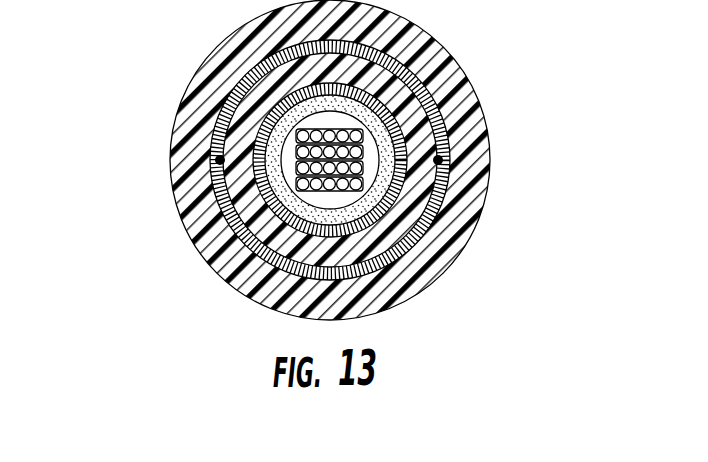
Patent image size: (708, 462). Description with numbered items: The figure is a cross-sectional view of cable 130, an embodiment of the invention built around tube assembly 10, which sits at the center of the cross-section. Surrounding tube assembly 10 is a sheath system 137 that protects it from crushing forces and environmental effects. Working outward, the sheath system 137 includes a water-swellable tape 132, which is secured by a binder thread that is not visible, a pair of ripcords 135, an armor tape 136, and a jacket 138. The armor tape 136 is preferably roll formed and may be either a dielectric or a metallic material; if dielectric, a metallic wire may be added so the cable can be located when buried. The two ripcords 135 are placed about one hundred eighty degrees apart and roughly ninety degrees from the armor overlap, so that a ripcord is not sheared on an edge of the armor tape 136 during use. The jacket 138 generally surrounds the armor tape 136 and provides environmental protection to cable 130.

The cable 130 is at (137, 70).
The jacket 138 is at (453, 240).
The sheath system 137 is at (206, 153).
The ripcords 135 is at (190, 200).
The water-swellable tape 132 is at (430, 206).
The armor tape 136 is at (240, 225).
The tube assembly 10 is at (412, 140).